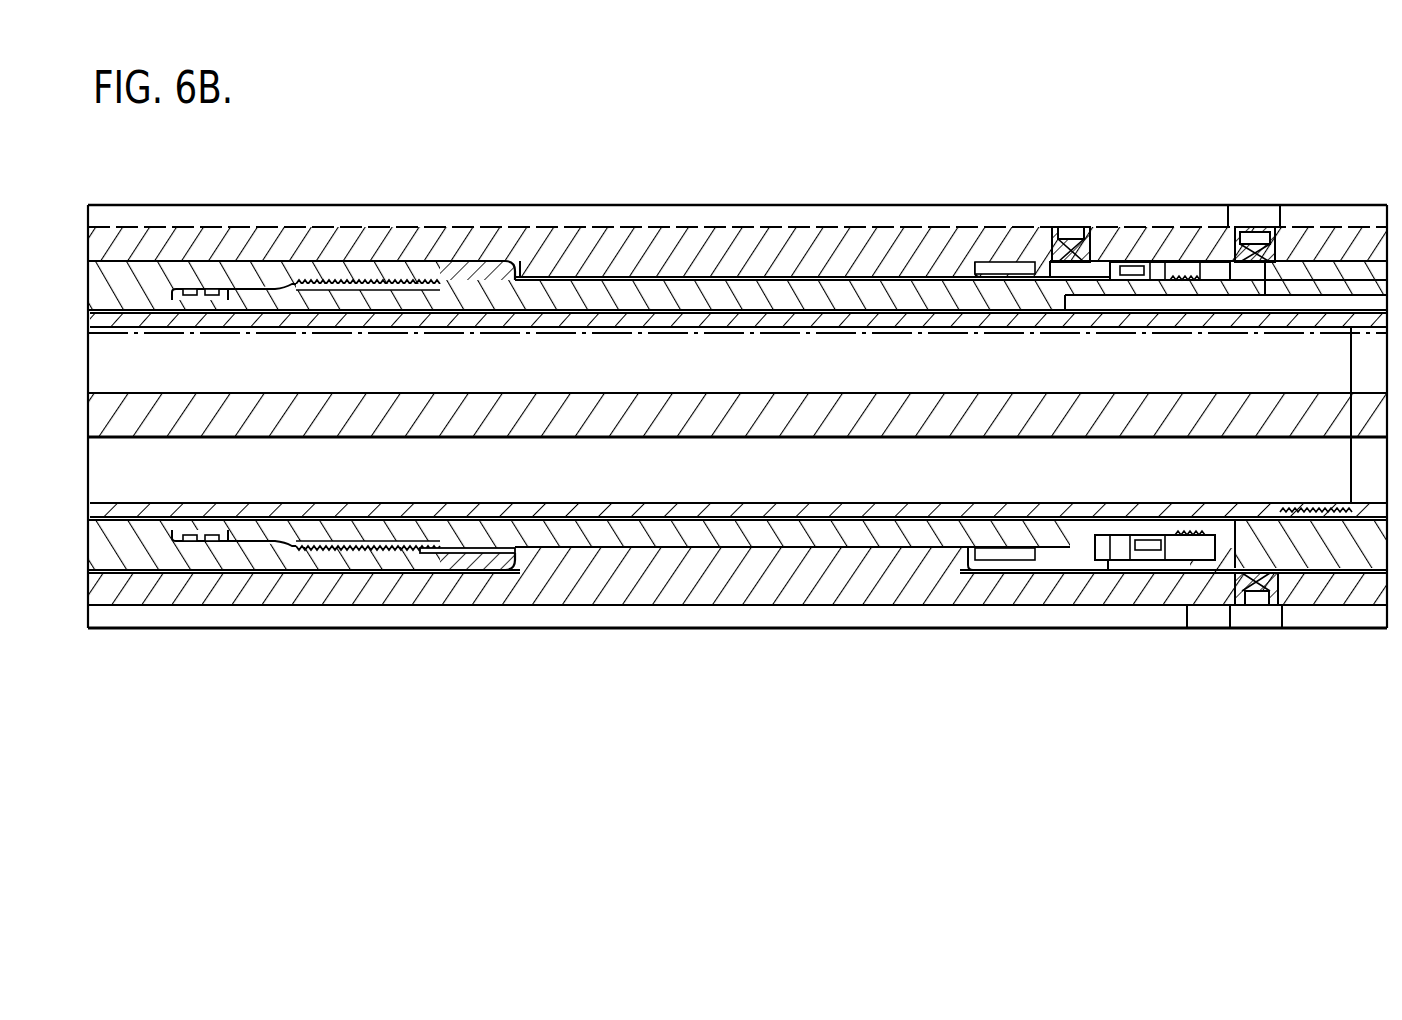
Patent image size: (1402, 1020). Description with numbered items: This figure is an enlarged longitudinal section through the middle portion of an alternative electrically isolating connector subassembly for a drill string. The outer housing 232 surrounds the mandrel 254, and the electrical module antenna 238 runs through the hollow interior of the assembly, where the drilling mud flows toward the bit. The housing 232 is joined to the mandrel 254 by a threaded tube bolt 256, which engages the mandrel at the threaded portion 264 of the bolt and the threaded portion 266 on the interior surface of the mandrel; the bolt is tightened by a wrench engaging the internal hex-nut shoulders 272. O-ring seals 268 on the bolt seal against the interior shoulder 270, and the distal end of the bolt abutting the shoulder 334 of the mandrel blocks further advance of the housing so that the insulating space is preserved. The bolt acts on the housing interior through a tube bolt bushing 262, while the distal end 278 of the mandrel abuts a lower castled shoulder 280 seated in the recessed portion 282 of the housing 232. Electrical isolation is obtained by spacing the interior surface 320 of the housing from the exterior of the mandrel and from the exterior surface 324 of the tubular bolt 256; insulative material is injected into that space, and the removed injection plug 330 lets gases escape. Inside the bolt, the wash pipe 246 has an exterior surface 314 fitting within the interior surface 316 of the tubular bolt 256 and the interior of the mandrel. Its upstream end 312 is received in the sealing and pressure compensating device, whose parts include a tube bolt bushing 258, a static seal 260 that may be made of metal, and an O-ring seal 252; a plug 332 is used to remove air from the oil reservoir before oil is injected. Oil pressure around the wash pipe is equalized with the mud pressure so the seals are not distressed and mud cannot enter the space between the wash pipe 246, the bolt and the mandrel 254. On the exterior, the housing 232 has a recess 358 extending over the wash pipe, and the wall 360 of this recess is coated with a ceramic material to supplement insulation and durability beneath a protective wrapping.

The housing 232 is at (785, 240).
The electrical module (EM) antenna 238 is at (745, 425).
The wash pipe 246 is at (935, 312).
The O-ring seal 252 is at (1343, 238).
The mandrel 254 is at (137, 273).
The tube bolt 256 is at (712, 268).
The tube bolt bushing 258 is at (1192, 578).
The static seal 260 is at (1148, 250).
The tube bolt bushing 262 is at (985, 577).
The threaded portion 264 is at (335, 284).
The threaded portion 266 is at (335, 548).
The O-ring seals 268 is at (213, 552).
The interior shoulder 270 is at (208, 290).
The internal hex-nut shoulders 272 is at (1125, 528).
The distal end of the mandrel 278 is at (445, 572).
The lower castled shoulder 280 is at (479, 582).
The recessed portion 282 is at (512, 555).
The upstream end of the wash pipe 312 is at (1327, 502).
The exterior surface of the wash pipe 314 is at (566, 325).
The interior surface of the tubular bolt 316 is at (478, 342).
The interior surface of the housing 320 is at (838, 276).
The exterior surface of the tubular bolt 324 is at (612, 290).
The injection plug 330 is at (1062, 222).
The plug 332 is at (1248, 208).
The shoulder of the mandrel 334 is at (178, 537).
The recess 358 is at (902, 210).
The wall of the recess 360 is at (735, 612).